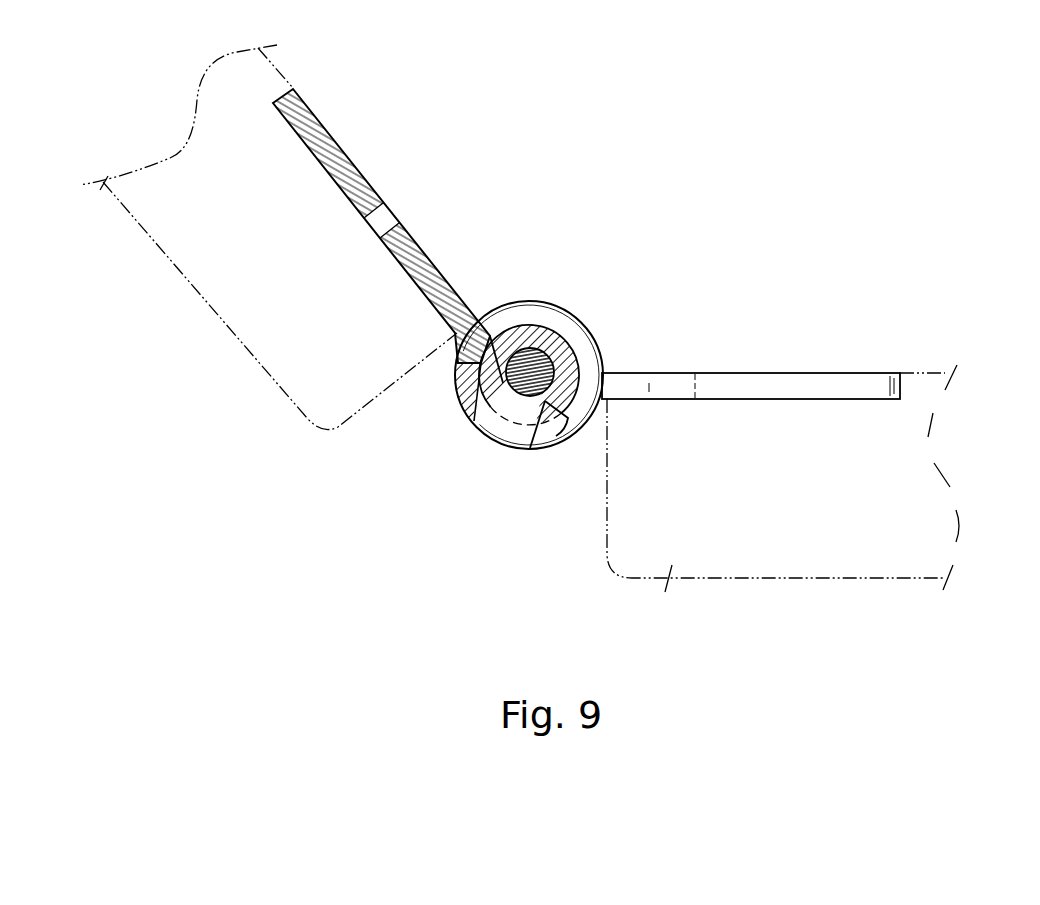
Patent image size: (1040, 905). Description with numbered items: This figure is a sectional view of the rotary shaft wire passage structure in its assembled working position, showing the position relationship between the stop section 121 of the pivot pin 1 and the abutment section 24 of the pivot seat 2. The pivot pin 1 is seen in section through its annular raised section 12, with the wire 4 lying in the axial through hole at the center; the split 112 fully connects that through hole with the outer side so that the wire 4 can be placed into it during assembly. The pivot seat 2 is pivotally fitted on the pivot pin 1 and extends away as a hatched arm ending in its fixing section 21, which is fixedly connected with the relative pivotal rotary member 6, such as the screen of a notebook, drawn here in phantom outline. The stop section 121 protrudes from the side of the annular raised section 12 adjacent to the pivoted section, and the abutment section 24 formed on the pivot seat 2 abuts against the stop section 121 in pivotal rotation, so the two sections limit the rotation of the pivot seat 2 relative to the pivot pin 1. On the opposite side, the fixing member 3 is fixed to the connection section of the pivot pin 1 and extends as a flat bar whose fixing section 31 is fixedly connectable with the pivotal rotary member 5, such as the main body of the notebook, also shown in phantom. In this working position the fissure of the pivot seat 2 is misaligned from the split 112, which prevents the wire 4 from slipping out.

The pivot pin 1 is at (567, 447).
The pivot seat 2 is at (400, 326).
The fixing section 21 is at (347, 172).
The annular raised section 12 is at (567, 407).
The stop section 121 is at (457, 398).
The abutment section 24 is at (420, 409).
The split 112 is at (503, 432).
The wire 4 is at (534, 348).
The fixing member 3 is at (648, 320).
The fixing section 31 is at (805, 400).
The pivotal rotary member 5 is at (672, 613).
The relative pivotal rotary member 6 is at (167, 302).